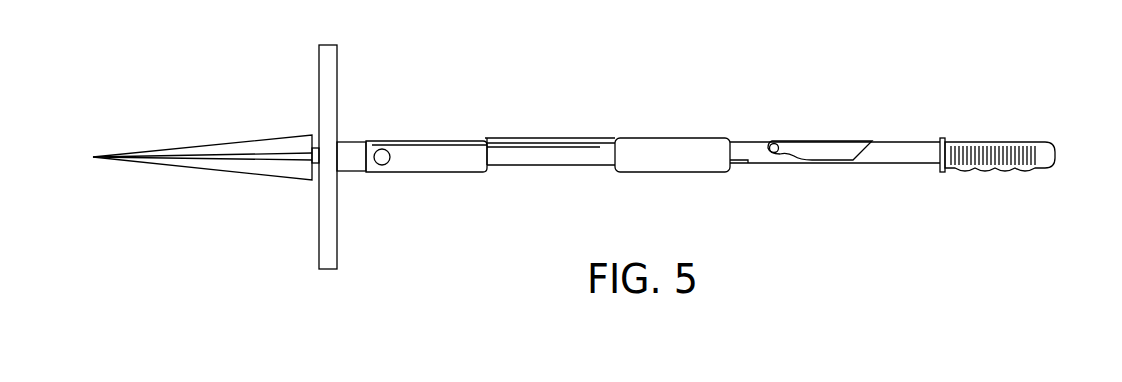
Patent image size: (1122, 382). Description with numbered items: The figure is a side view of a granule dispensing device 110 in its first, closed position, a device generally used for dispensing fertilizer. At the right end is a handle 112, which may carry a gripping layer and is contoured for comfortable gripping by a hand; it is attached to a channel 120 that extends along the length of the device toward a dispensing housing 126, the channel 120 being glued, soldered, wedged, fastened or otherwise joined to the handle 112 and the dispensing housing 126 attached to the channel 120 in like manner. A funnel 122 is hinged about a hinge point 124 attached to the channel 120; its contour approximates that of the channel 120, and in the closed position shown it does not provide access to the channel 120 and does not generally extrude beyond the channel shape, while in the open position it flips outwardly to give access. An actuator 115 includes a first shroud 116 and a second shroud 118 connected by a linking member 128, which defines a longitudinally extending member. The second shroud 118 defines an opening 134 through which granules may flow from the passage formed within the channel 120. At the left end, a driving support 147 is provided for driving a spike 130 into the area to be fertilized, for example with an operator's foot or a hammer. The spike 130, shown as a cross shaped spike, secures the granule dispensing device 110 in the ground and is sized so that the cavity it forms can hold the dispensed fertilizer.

The granule dispensing device 110 is at (865, 212).
The handle 112 is at (984, 142).
The actuator 115 is at (547, 118).
The first shroud 116 is at (678, 147).
The second shroud 118 is at (455, 153).
The channel 120 is at (757, 162).
The funnel 122 is at (856, 146).
The hinge point 124 is at (776, 143).
The dispensing housing 126 is at (417, 190).
The linking member 128 is at (580, 140).
The spike 130 is at (208, 152).
The opening 134 is at (382, 150).
The driving support 147 is at (328, 90).